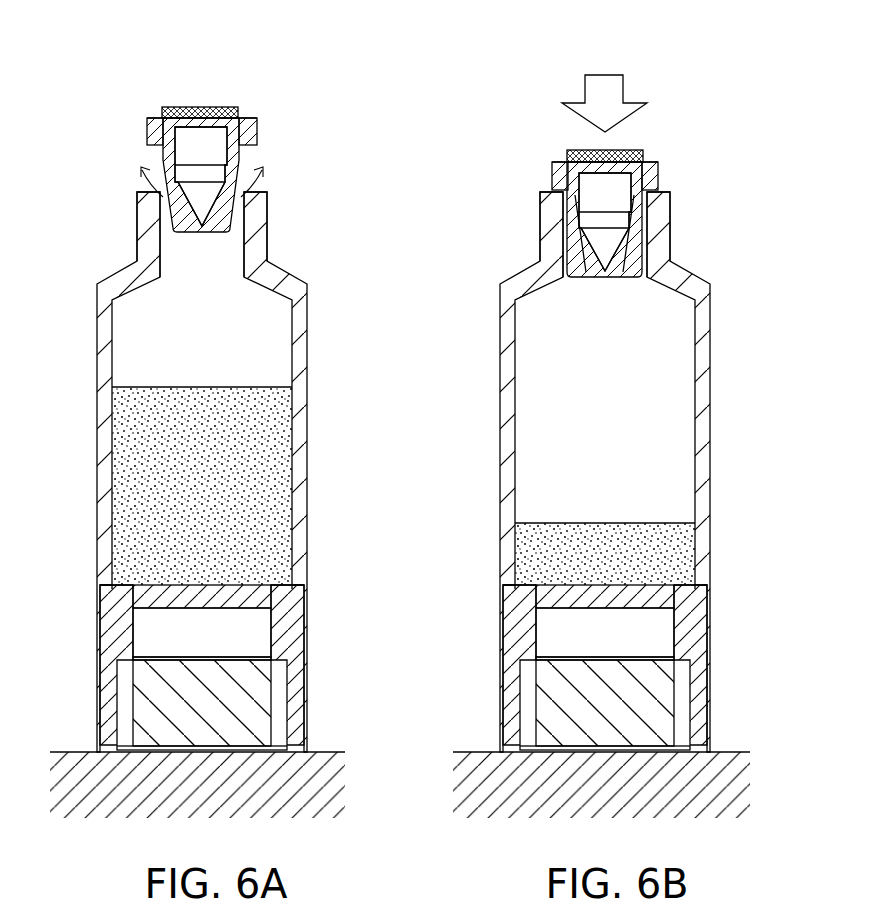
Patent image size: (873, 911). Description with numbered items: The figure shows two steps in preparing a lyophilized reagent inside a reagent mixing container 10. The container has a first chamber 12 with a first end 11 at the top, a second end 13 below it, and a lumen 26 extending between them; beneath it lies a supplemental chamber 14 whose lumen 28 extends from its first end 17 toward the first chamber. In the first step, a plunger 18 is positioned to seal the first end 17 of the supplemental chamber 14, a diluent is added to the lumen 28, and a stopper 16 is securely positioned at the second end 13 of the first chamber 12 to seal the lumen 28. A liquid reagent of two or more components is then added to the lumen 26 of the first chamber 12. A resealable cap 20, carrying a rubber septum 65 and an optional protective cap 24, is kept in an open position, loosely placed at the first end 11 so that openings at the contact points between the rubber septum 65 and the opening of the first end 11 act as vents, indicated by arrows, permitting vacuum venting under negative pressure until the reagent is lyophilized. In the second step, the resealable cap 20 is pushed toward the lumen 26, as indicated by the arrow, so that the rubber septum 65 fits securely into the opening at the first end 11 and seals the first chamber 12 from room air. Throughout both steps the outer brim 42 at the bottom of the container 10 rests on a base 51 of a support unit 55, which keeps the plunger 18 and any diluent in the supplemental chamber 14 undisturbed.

In FIG. 6A, the reagent mixing container 10 is at (318, 64).
In FIG. 6B, the reagent mixing container 10 is at (748, 64).
In FIG. 6A, the first end 11 is at (265, 197).
In FIG. 6B, the first end 11 is at (624, 232).
In FIG. 6A, the first chamber 12 is at (80, 262).
In FIG. 6B, the first chamber 12 is at (651, 472).
In FIG. 6A, the second end 13 is at (277, 585).
In FIG. 6B, the second end 13 is at (584, 572).
In FIG. 6A, the supplemental chamber 14 is at (202, 652).
In FIG. 6B, the supplemental chamber 14 is at (632, 652).
In FIG. 6A, the stopper 16 is at (263, 603).
In FIG. 6B, the stopper 16 is at (642, 601).
In FIG. 6A, the first end 17 is at (272, 658).
In FIG. 6B, the first end 17 is at (642, 663).
In FIG. 6A, the plunger 18 is at (262, 697).
In FIG. 6B, the plunger 18 is at (642, 703).
In FIG. 6A, the resealable cap 20 is at (200, 128).
In FIG. 6B, the resealable cap 20 is at (633, 163).
In FIG. 6A, the protective cap 24 is at (240, 113).
In FIG. 6B, the protective cap 24 is at (567, 156).
In FIG. 6A, the lumen 26 is at (189, 450).
In FIG. 6B, the lumen 26 is at (605, 505).
In FIG. 6A, the lumen 28 is at (189, 647).
In FIG. 6B, the lumen 28 is at (605, 632).
In FIG. 6A, the outer brim 42 is at (292, 748).
In FIG. 6B, the outer brim 42 is at (647, 737).
In FIG. 6A, the base 51 is at (68, 750).
In FIG. 6B, the base 51 is at (601, 724).
In FIG. 6A, the support unit 55 is at (152, 814).
In FIG. 6B, the support unit 55 is at (601, 800).
In FIG. 6A, the rubber septum 65 is at (166, 196).
In FIG. 6B, the rubber septum 65 is at (639, 253).